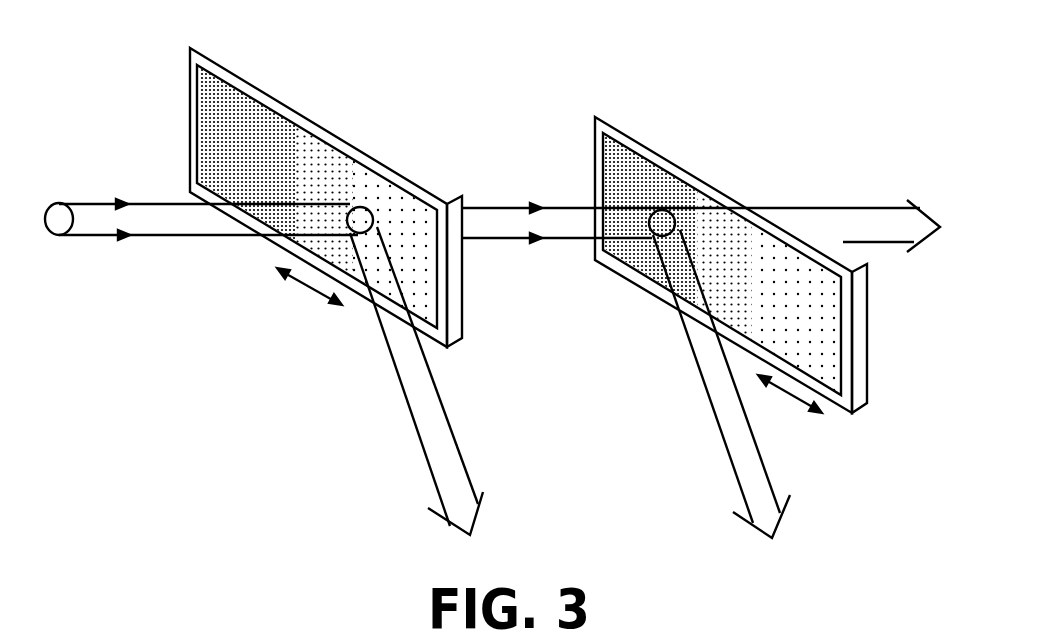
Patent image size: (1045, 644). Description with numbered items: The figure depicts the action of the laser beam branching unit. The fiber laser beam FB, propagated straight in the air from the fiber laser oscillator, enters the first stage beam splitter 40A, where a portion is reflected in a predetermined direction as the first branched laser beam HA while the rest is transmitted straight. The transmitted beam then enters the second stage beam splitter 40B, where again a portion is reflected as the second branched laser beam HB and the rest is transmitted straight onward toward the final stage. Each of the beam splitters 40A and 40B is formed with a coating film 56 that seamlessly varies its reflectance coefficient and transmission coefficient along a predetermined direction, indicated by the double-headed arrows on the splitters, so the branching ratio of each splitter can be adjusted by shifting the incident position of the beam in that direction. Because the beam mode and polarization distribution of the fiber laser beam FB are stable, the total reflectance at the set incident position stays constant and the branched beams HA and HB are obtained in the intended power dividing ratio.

The first stage beam splitter 40A is at (298, 103).
The second stage beam splitter 40B is at (682, 156).
The coating film 56 is at (330, 163).
The fiber laser beam FB is at (482, 184).
The first branched laser beam HA is at (408, 406).
The second branched laser beam HB is at (713, 410).